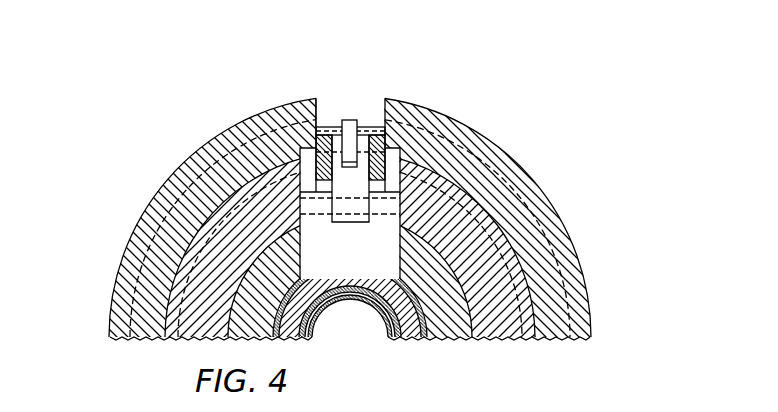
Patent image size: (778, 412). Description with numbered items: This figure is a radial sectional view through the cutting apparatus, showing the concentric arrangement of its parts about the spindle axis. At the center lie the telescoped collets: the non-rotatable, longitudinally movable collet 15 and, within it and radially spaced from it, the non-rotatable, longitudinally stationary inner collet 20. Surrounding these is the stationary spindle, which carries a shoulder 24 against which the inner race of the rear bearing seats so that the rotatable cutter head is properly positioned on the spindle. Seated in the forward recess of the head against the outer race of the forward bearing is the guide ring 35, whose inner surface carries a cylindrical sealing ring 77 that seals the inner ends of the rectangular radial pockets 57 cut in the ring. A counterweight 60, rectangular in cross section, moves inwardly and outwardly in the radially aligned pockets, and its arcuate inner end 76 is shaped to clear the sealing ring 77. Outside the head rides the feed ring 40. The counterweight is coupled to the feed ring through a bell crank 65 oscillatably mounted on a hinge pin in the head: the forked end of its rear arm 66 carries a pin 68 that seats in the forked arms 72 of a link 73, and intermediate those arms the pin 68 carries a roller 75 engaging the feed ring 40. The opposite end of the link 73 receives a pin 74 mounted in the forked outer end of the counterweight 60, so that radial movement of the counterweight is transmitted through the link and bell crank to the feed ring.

The collet 15 is at (399, 338).
The inner collet 20 is at (389, 338).
The shoulder 24 is at (412, 338).
The guide ring 35 is at (458, 312).
The feed ring 40 is at (565, 262).
The radial pocket 57 is at (303, 257).
The counterweight 60 is at (395, 250).
The bell crank 65 is at (330, 127).
The rear arm 66 is at (303, 205).
The pin 68 is at (376, 120).
The forked arms 72 is at (338, 122).
The link 73 is at (303, 222).
The pin 74 is at (386, 217).
The roller 75 is at (352, 120).
The inner ends 76 is at (335, 263).
The sealing ring 77 is at (273, 317).